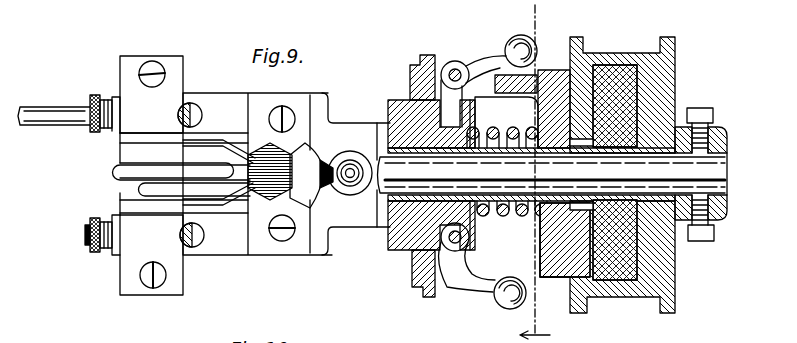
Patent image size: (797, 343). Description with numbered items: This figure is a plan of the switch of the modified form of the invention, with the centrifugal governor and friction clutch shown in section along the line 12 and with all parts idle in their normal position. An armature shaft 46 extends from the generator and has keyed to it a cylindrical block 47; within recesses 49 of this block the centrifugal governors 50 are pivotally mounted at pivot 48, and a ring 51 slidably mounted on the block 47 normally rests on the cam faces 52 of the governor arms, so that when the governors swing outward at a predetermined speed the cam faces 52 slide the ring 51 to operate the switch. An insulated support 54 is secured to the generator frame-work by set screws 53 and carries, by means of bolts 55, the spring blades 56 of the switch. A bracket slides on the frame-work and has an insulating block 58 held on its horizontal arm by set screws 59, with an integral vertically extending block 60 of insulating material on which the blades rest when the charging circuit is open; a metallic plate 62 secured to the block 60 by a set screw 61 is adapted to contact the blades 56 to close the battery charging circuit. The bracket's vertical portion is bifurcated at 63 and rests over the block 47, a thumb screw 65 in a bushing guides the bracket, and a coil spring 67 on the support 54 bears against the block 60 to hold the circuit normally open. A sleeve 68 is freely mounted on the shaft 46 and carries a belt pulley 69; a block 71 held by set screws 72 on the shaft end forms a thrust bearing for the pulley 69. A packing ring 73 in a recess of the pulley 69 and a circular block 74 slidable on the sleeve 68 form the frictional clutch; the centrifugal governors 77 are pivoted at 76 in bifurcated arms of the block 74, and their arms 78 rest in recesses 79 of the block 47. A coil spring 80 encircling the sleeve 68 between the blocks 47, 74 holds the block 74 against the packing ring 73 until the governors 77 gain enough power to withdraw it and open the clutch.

The line 12—12 section reference 12 is at (542, 172).
The armature shaft 46 is at (531, 174).
The cylindrical block 47 is at (392, 250).
The pivot 48 is at (480, 250).
The recesses 49 is at (474, 238).
The centrifugal governors 50 is at (485, 305).
The ring 51 is at (450, 62).
The cam faces 52 is at (443, 285).
The set screws 53 is at (140, 72).
The insulated support 54 is at (120, 244).
The bolts 55 is at (198, 108).
The spring blades 56 is at (238, 162).
The insulating block 58 is at (294, 255).
The set screws 59 is at (290, 115).
The vertically extending block 60 is at (256, 150).
The set screw 61 is at (340, 193).
The metallic plate 62 is at (306, 165).
The bifurcated portion 63 is at (412, 282).
The thumb screw 65 is at (551, 175).
The coil spring 67 is at (145, 183).
The sleeve 68 is at (616, 148).
The belt pulley 69 is at (655, 78).
The block 71 is at (727, 145).
The set screws 72 is at (706, 115).
The packing ring 73 is at (620, 268).
The circular block 74 is at (563, 278).
The pivot 76 is at (512, 68).
The centrifugal governors 77 is at (548, 68).
The arms 78 is at (413, 97).
The recesses 79 is at (480, 108).
The coil spring 80 is at (502, 204).